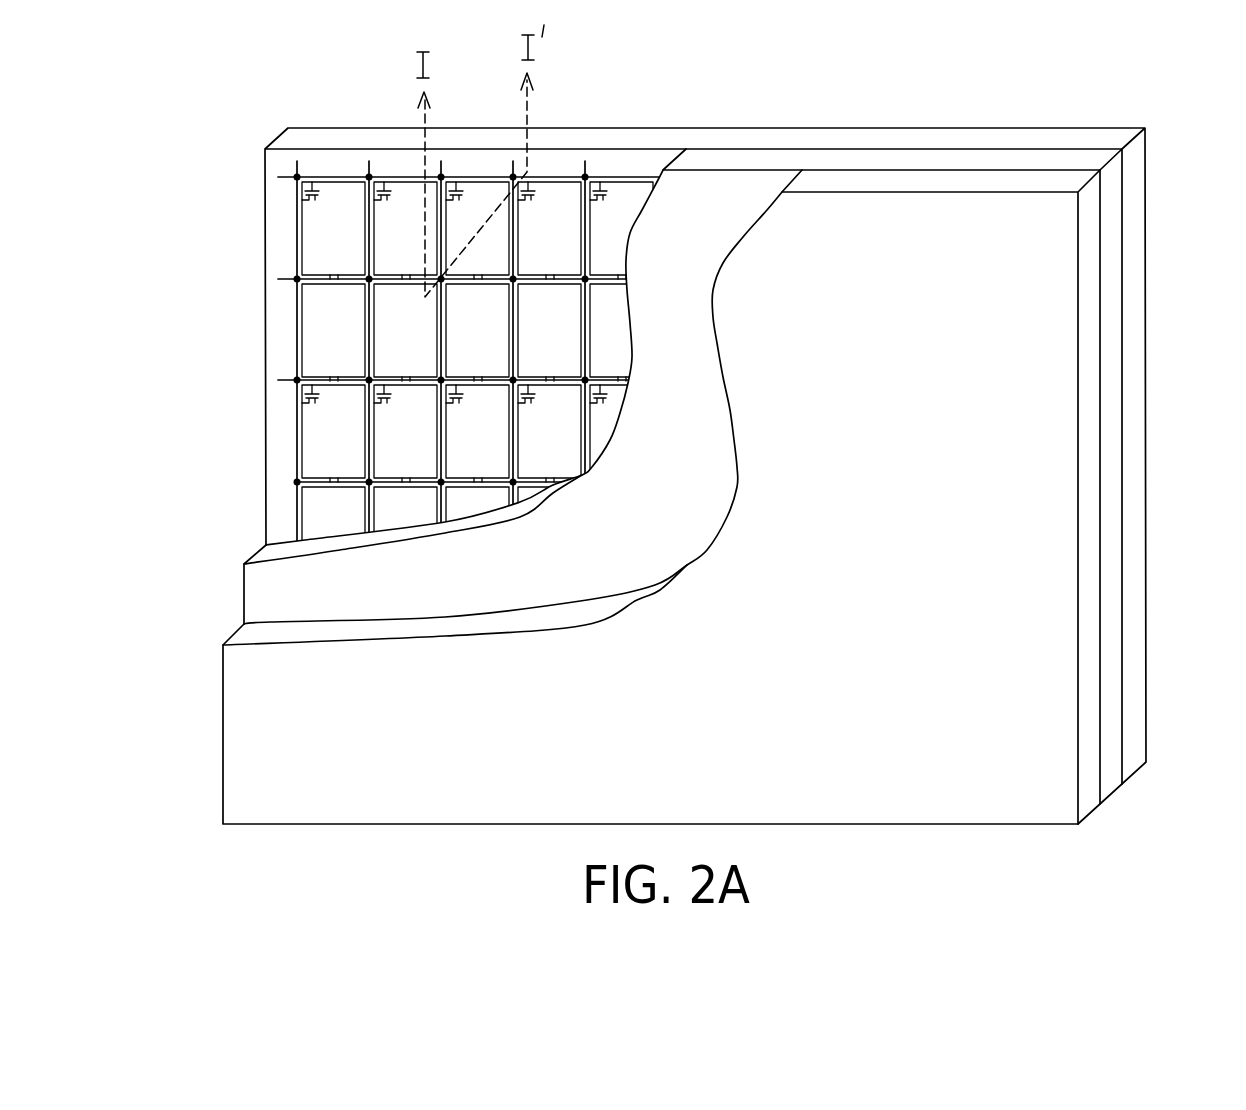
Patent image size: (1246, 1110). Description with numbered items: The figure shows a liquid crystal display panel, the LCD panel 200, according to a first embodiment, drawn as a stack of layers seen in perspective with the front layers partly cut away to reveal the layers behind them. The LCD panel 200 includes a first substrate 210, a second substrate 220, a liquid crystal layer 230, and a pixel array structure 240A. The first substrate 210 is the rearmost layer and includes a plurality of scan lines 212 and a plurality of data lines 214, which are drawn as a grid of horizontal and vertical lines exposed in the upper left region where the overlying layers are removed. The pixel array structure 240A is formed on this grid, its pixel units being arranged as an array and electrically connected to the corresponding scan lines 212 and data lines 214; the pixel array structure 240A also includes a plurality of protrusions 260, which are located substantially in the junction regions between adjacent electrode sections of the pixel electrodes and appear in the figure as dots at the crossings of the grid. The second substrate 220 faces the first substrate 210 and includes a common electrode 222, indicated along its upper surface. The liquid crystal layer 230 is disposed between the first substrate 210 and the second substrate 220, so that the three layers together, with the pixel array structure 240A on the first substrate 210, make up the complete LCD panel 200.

The LCD panel 200 is at (1228, 863).
The first substrate 210 is at (1095, 137).
The scan lines 212 is at (333, 178).
The data lines 214 is at (298, 230).
The second substrate 220 is at (683, 417).
The common electrode 222 is at (855, 170).
The liquid crystal layer 230 is at (1005, 158).
The pixel array structure 240A is at (287, 328).
The protrusions 260 is at (297, 482).